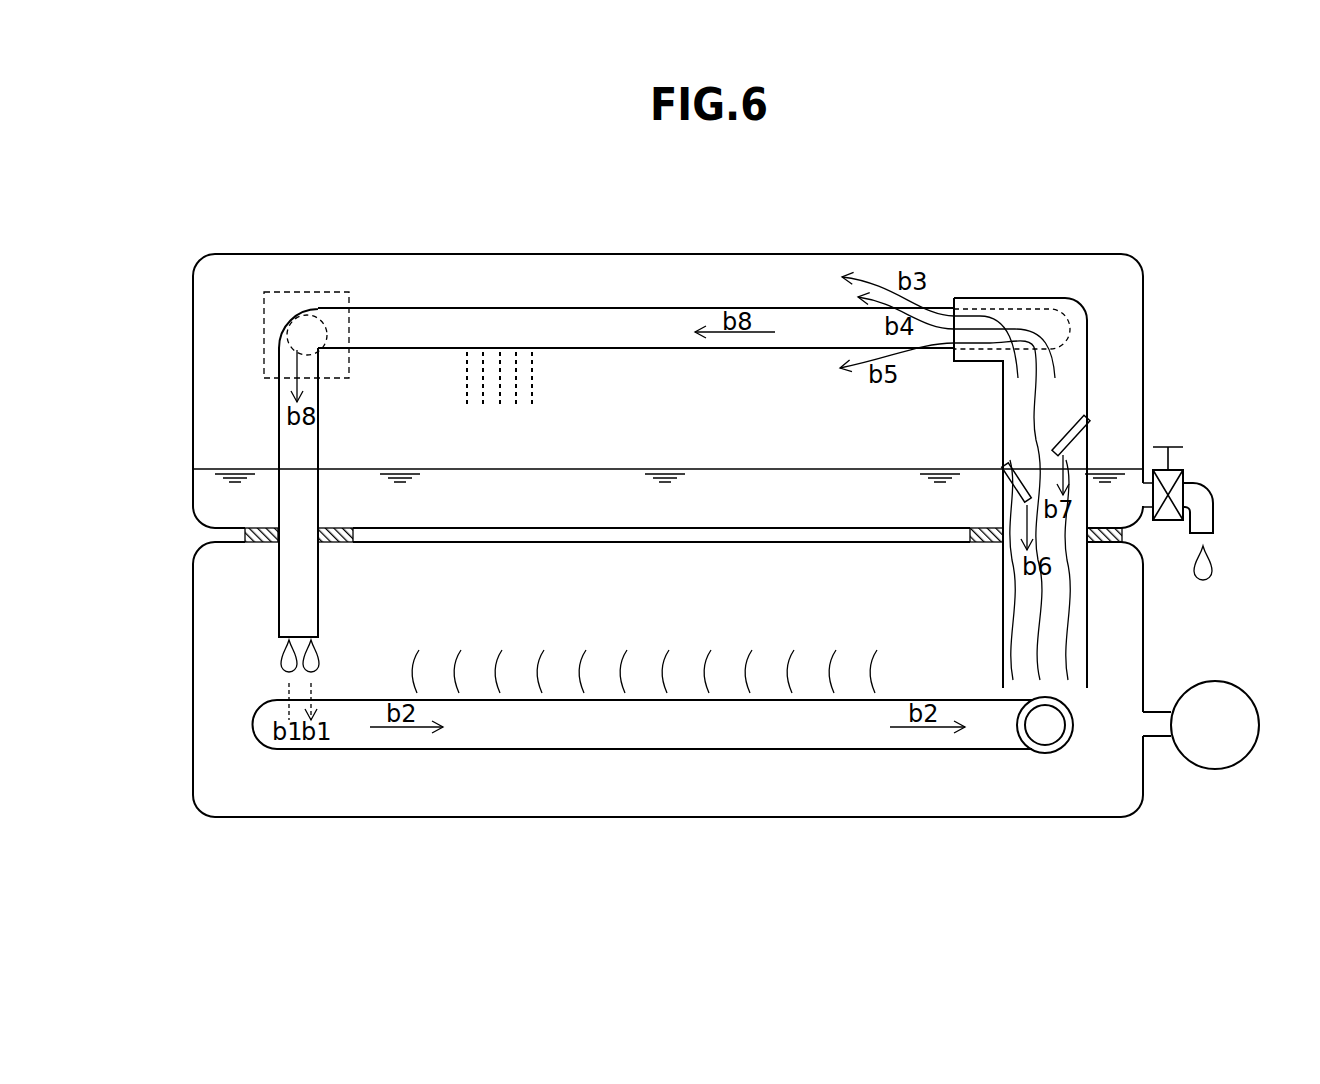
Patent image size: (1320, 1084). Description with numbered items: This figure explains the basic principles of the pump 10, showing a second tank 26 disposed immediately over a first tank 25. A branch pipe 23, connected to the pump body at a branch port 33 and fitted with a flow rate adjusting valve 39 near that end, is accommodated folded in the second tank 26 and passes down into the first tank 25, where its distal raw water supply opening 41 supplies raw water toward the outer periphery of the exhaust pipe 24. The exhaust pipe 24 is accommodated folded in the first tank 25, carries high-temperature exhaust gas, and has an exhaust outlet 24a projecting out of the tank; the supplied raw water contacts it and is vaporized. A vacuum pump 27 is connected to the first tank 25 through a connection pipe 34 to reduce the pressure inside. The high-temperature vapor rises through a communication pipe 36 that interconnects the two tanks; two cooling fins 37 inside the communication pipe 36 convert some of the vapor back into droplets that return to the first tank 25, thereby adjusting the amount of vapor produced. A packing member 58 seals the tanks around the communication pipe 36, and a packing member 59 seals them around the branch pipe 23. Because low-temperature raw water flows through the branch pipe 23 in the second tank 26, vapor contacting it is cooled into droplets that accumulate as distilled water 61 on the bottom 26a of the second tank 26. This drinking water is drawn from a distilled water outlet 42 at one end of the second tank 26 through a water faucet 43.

The pump 10 is at (200, 143).
The branch pipe 23 is at (556, 308).
The exhaust pipe 24 is at (563, 750).
The exhaust outlet 24a is at (1045, 732).
The first tank 25 is at (645, 818).
The second tank 26 is at (655, 254).
The bottom of the second tank 26a is at (765, 528).
The vacuum pump 27 is at (1230, 684).
The branch port 33 is at (312, 322).
The connection pipe 34 is at (1162, 712).
The communication pipe 36 is at (1030, 296).
The cooling fins 37 is at (1065, 437).
The flow rate adjusting valve 39 is at (297, 291).
The raw water supply opening 41 is at (298, 640).
The distilled water outlet 42 is at (1200, 496).
The water faucet 43 is at (1178, 470).
The packing member 58 is at (985, 548).
The packing member 59 is at (268, 545).
The distilled water 61 is at (665, 472).